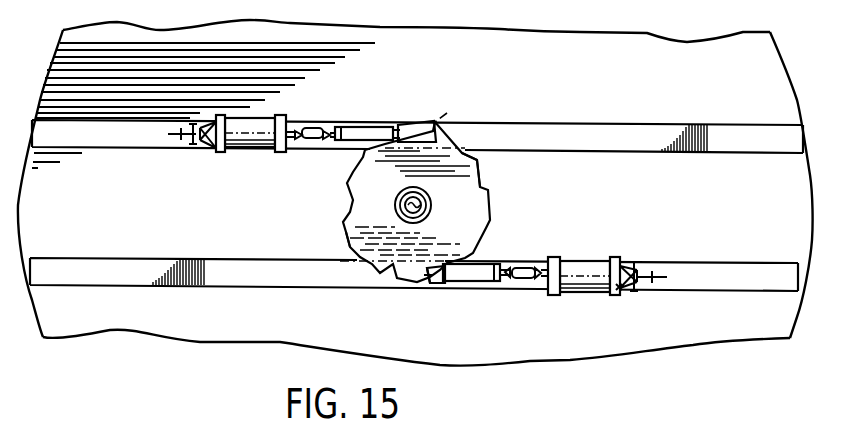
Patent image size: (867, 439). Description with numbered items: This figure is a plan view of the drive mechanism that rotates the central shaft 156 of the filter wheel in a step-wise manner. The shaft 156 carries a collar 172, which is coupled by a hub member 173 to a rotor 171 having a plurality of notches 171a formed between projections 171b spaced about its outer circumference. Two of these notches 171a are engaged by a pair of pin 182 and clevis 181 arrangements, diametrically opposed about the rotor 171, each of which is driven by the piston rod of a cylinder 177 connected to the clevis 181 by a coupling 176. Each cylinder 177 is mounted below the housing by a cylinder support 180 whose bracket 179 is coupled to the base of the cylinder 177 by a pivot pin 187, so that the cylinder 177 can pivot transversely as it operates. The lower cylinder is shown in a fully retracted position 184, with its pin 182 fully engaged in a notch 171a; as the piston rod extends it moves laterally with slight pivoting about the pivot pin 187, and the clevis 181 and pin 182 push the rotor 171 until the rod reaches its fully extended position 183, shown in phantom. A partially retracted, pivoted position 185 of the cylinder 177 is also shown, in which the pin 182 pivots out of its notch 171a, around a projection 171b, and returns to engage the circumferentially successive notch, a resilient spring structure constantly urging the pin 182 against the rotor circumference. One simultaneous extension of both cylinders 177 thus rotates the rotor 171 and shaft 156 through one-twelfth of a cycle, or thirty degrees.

The central shaft 156 is at (397, 202).
The rotor 171 is at (493, 208).
The notches 171a is at (465, 150).
The projections 171b is at (477, 162).
The collar 172 is at (396, 206).
The hub member 173 is at (362, 232).
The coupling 176 is at (323, 128).
The cylinder 177 is at (258, 141).
The bracket 179 is at (197, 128).
The cylinder support 180 is at (180, 137).
The clevis 181 is at (362, 127).
The pin 182 is at (393, 131).
The fully extended position 183 is at (447, 113).
The fully retracted position 184 is at (448, 283).
The partially retracted, pivoted position 185 is at (427, 283).
The pivot pin 187 is at (619, 288).